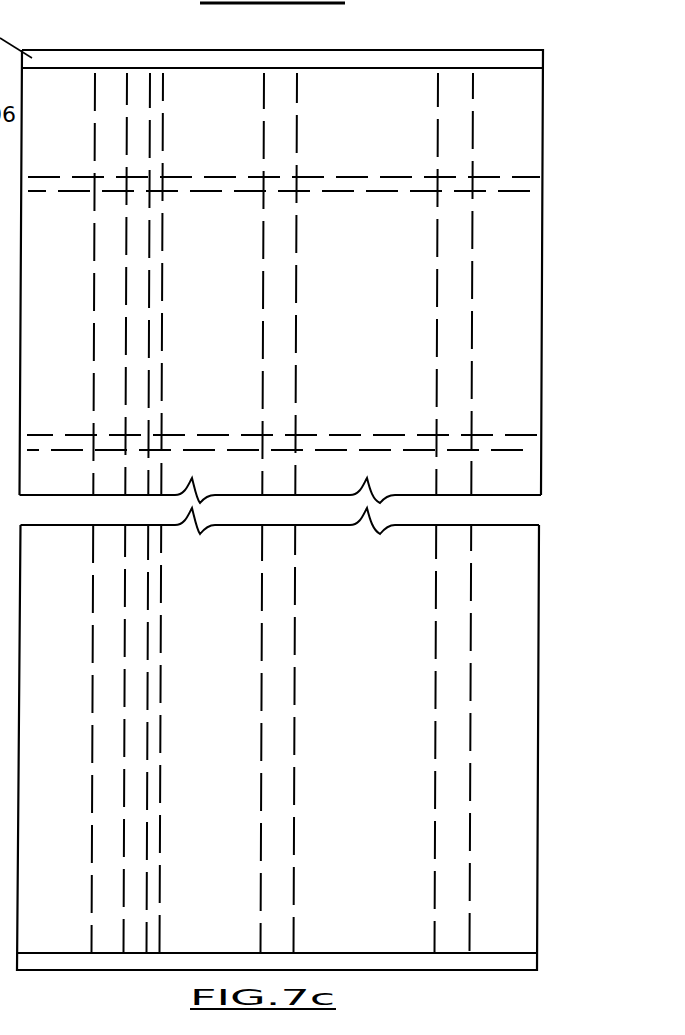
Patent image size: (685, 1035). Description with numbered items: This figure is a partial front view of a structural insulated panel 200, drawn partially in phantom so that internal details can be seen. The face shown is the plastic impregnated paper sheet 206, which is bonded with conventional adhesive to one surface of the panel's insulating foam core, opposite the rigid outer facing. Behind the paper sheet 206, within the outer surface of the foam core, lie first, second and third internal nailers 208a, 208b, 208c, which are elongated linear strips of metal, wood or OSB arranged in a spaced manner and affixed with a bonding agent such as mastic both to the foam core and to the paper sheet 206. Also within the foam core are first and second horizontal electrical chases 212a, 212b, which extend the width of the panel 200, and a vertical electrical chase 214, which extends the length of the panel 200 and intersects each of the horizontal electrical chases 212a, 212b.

The structural insulated panel 200 is at (558, 91).
The plastic impregnated paper sheet 206 is at (523, 270).
The first internal nailer 208a is at (92, 103).
The second internal nailer 208b is at (298, 127).
The third internal nailer 208c is at (475, 95).
The vertical electrical chase 214 is at (163, 90).
The first horizontal electrical chase 212a is at (520, 177).
The second horizontal electrical chase 212b is at (516, 432).